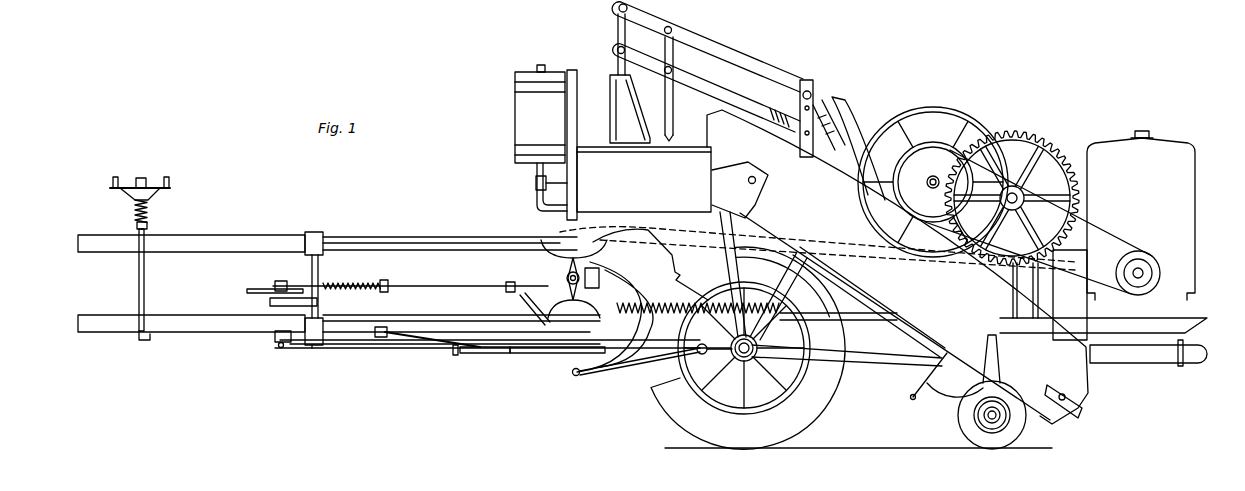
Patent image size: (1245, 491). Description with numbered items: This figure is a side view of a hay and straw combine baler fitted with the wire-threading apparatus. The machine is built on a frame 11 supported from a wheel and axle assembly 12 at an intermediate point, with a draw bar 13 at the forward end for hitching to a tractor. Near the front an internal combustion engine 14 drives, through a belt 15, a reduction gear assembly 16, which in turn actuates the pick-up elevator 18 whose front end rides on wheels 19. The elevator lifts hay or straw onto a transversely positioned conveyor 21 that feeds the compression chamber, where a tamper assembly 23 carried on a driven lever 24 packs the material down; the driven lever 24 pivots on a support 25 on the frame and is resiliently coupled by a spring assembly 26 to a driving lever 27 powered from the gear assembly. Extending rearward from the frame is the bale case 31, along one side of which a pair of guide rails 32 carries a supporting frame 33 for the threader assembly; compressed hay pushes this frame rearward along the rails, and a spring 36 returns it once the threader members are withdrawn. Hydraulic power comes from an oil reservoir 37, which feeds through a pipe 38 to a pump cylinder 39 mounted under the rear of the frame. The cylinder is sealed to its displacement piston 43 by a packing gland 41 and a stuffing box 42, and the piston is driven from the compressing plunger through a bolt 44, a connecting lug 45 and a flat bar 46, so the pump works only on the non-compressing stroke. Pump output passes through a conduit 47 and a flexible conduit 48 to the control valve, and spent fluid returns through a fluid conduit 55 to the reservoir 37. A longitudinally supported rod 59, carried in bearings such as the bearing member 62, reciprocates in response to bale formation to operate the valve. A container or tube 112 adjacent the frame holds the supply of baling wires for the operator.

The frame 11 is at (440, 334).
The wheel and axle assembly 12 is at (805, 412).
The draw bar 13 is at (1185, 360).
The internal combustion motor or engine 14 is at (1160, 156).
The belt 15 is at (1098, 228).
The reduction gear assembly 16 is at (1026, 134).
The pick-up elevator 18 is at (1088, 396).
The wheels 19 is at (966, 416).
The conveyor 21 is at (680, 157).
The tamper assembly 23 is at (655, 106).
The driven lever 24 is at (752, 58).
The support 25 is at (808, 88).
The spring assembly 26 is at (775, 100).
The driving lever 27 is at (856, 125).
The bale case 31 is at (200, 246).
The guide rails 32 is at (398, 245).
The supporting frame 33 is at (618, 258).
The spring 36 is at (683, 302).
The oil tank or reservoir 37 is at (517, 74).
The pipe or fluid passage 38 is at (536, 200).
The pump cylinder 39 is at (545, 350).
The packing gland 41 is at (455, 349).
The stuffing box 42 is at (485, 350).
The displacement piston 43 is at (345, 346).
The bolt 44 is at (281, 348).
The connecting lug 45 is at (276, 334).
The flat bar 46 is at (381, 338).
The conduit 47 is at (655, 350).
The flexible conduit 48 is at (603, 338).
The fluid conduit 55 is at (536, 182).
The rod 59 is at (430, 284).
The bearing member 62 is at (515, 272).
The container or tube 112 is at (662, 232).